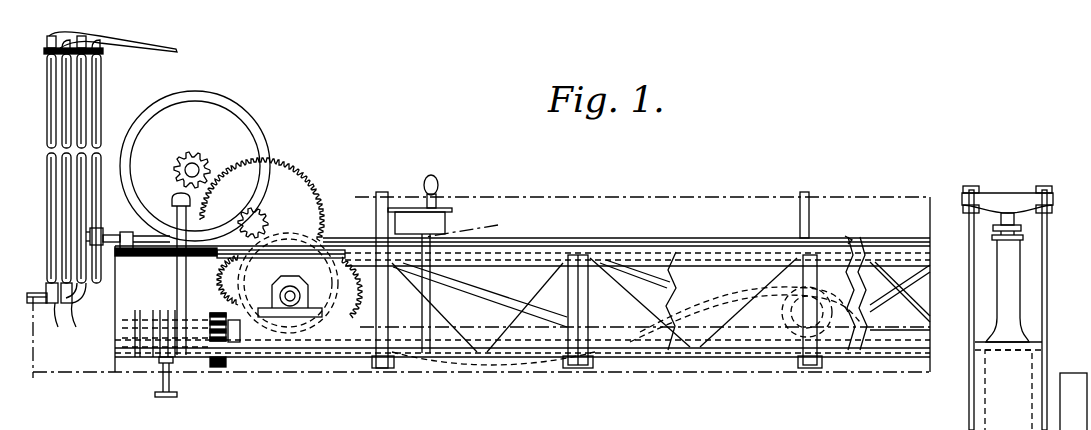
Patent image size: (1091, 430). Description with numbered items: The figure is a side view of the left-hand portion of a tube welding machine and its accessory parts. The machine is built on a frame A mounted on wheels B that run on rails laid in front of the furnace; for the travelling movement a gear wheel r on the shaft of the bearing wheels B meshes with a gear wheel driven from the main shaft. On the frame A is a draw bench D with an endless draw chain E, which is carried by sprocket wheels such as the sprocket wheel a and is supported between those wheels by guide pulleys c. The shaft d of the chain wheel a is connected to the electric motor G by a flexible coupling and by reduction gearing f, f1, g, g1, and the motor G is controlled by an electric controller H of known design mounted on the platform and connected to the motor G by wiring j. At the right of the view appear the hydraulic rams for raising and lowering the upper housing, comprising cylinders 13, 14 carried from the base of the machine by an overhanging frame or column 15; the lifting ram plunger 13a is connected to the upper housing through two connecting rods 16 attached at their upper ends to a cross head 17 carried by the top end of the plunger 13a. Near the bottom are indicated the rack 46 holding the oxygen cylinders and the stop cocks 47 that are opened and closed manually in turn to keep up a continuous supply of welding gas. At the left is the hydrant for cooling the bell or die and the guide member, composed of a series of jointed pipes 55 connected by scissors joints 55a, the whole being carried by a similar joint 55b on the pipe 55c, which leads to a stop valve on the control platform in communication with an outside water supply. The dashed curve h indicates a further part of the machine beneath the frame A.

The frame A is at (540, 256).
The wheels B is at (163, 361).
The draw bench D is at (742, 241).
The endless draw chain E is at (874, 257).
The electric motor G is at (195, 166).
The electric controller H is at (440, 207).
The sprocket wheel a is at (304, 238).
The guide pulleys c is at (180, 391).
The shaft d is at (290, 303).
The reduction gearing f is at (333, 238).
The reduction gearing f1 is at (267, 217).
The reduction gearing g is at (303, 197).
The reduction gearing g1 is at (207, 158).
The axle h is at (745, 336).
The wiring j is at (425, 232).
The gear wheel r is at (212, 311).
The cylinder 13 is at (1010, 295).
The lifting ram plunger 13a is at (1010, 223).
The cylinder 14 is at (987, 397).
The overhanging frame or column 15 is at (1045, 401).
The connecting rods 16 is at (1042, 300).
The cross head 17 is at (988, 203).
The rack 46 is at (630, 427).
The stop cocks 47 is at (876, 423).
The jointed pipes 55 is at (97, 127).
The scissors joints 55a is at (116, 190).
The joint 55b is at (98, 247).
The pipe 55c is at (122, 236).